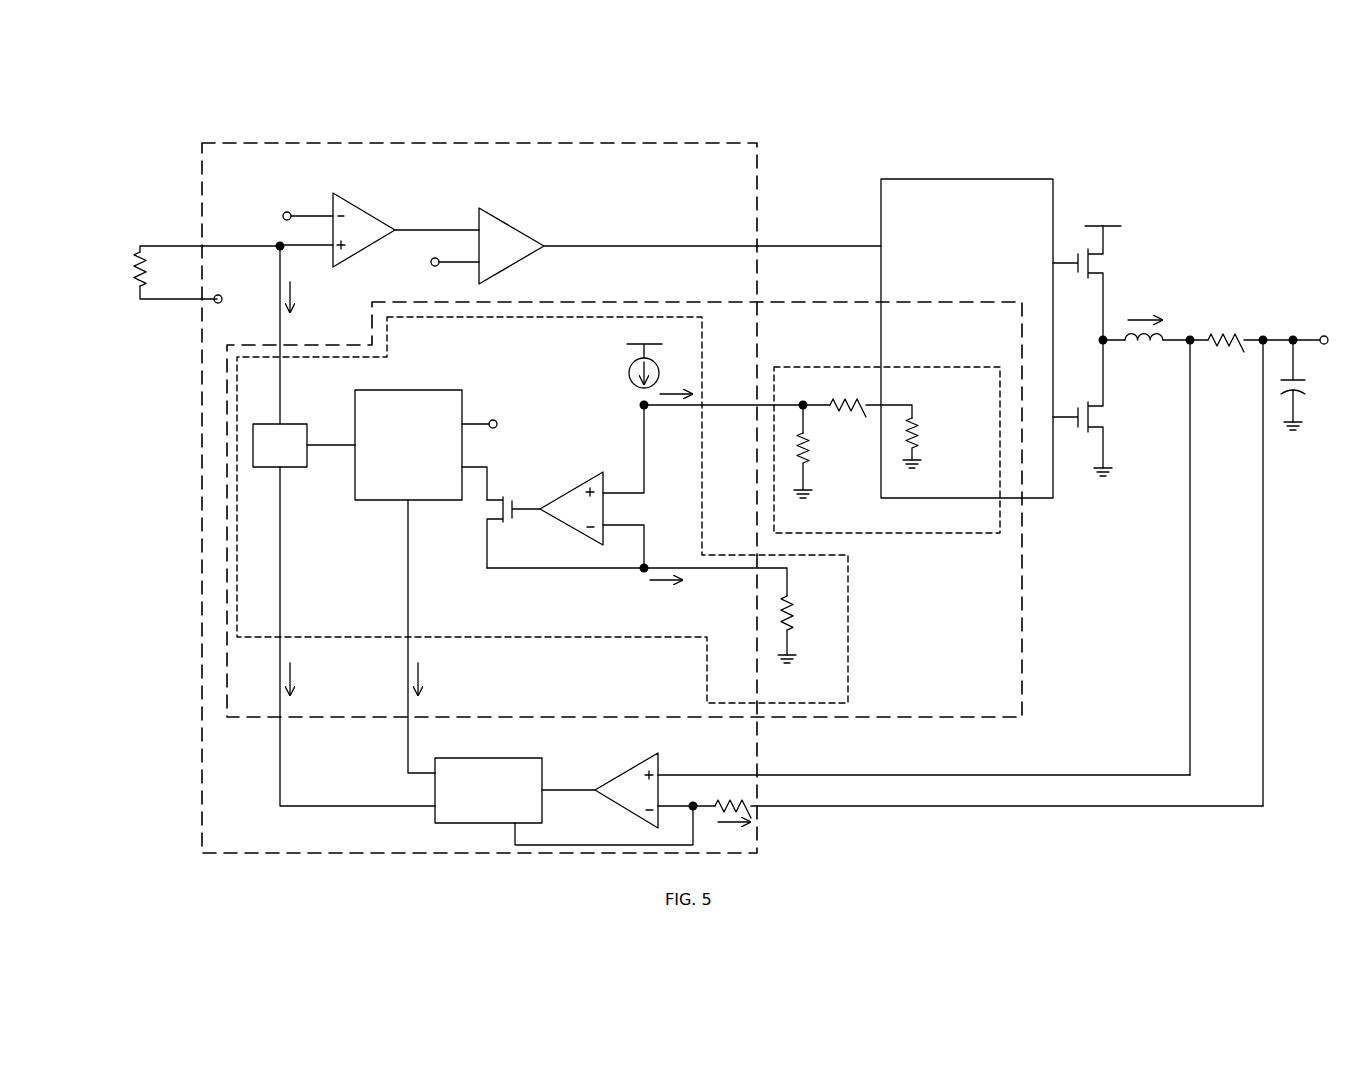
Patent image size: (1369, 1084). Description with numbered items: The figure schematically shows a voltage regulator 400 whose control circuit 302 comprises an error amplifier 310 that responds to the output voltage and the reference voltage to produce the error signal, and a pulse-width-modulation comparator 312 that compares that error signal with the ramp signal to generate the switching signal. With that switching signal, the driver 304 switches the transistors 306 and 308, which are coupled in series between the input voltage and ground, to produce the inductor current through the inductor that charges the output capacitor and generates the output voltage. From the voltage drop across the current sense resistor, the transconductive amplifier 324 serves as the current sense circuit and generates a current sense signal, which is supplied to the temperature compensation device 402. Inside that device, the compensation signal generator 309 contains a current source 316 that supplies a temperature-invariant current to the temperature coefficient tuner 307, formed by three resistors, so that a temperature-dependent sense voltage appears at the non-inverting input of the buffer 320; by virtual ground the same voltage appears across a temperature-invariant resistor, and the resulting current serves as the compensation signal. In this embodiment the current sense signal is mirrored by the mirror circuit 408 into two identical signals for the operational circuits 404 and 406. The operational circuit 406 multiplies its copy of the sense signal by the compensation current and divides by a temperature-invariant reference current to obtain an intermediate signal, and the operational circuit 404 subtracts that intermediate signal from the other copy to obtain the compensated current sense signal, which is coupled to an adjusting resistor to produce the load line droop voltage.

The voltage regulator 400 is at (1244, 196).
The control circuit 302 is at (758, 197).
The driver 304 is at (958, 179).
The transistor 306 is at (1114, 262).
The transistor 308 is at (1114, 418).
The error amplifier 310 is at (368, 214).
The PWM comparator 312 is at (512, 226).
The current source 316 is at (632, 372).
The buffer 320 is at (574, 492).
The transconductive amplifier 324 is at (628, 768).
The temperature compensation device 402 is at (1023, 632).
The operational circuit 404 is at (290, 424).
The operational circuit 406 is at (410, 390).
The mirror circuit 408 is at (512, 758).
The temperature coefficient tuner 307 is at (958, 536).
The compensation signal generator 309 is at (849, 630).